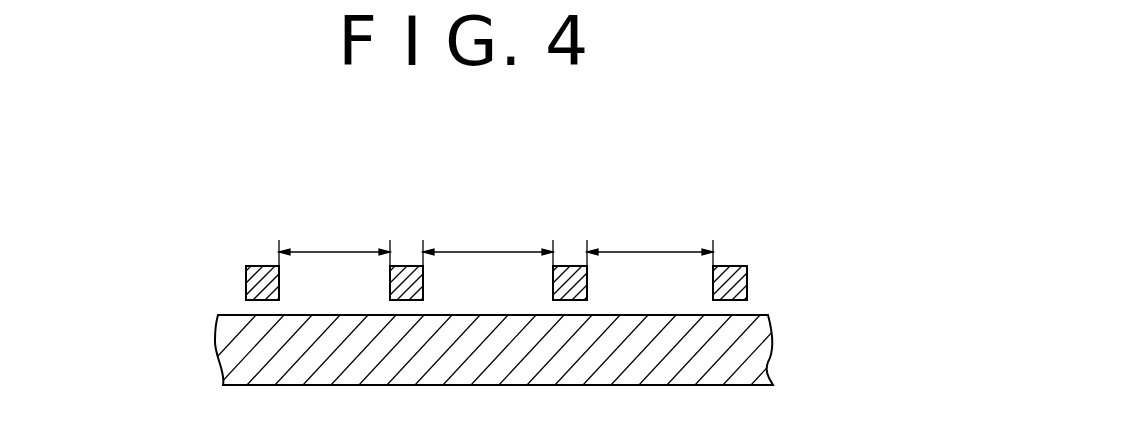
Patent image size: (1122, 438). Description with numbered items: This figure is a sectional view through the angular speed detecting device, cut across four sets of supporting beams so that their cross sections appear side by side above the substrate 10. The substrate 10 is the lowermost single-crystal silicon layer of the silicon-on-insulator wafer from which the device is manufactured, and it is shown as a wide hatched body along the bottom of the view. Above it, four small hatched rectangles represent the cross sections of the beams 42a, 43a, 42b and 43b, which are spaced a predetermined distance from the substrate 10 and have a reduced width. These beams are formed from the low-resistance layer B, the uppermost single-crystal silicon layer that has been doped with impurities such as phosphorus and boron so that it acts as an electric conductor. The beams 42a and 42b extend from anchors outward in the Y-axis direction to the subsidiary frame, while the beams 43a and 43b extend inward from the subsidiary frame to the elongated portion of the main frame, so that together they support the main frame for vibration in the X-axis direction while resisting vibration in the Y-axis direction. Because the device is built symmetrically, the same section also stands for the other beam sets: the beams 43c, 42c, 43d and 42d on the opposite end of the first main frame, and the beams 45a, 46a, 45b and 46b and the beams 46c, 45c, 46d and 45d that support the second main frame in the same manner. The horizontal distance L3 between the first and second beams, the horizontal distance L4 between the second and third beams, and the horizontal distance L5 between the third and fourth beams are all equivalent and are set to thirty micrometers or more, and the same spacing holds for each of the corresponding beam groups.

The substrate 10 is at (769, 343).
The beam 42a is at (255, 266).
The beam 43a is at (407, 266).
The beam 42b is at (572, 266).
The beam 43b is at (727, 266).
The beam 43c is at (264, 283).
The beam 45a is at (264, 283).
The beam 46c is at (264, 283).
The beam 42c is at (408, 283).
The beam 46a is at (408, 283).
The beam 45c is at (408, 283).
The beam 43d is at (571, 283).
The beam 45b is at (571, 283).
The beam 46d is at (571, 283).
The beam 42d is at (731, 283).
The beam 46b is at (731, 283).
The beam 45d is at (731, 283).
The low-resistance layer B is at (747, 281).
The horizontal distance L3 is at (334, 241).
The horizontal distance L4 is at (488, 241).
The horizontal distance L5 is at (650, 241).